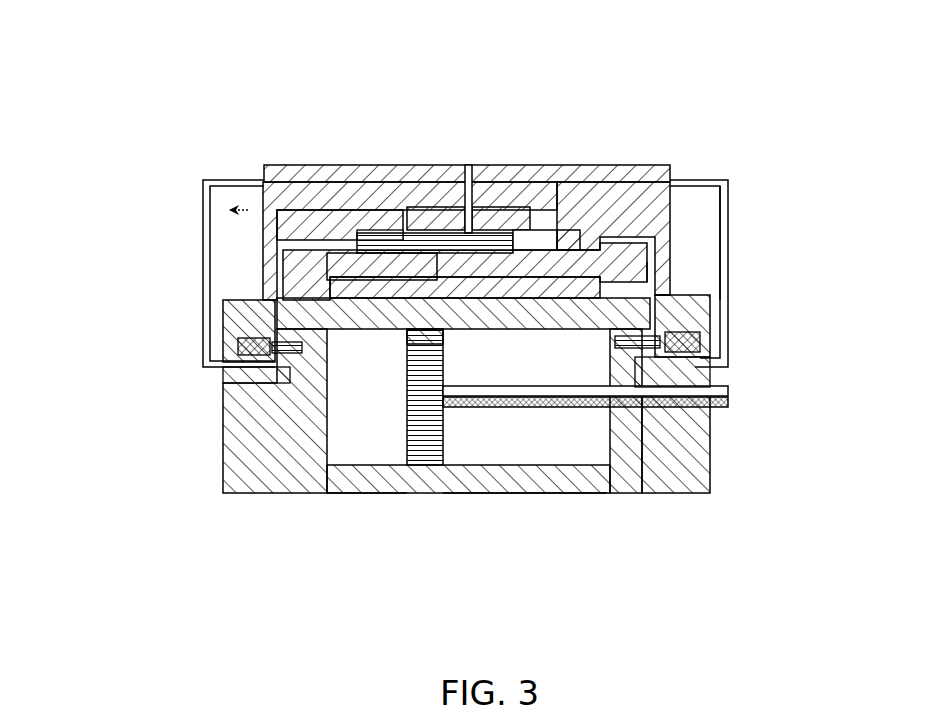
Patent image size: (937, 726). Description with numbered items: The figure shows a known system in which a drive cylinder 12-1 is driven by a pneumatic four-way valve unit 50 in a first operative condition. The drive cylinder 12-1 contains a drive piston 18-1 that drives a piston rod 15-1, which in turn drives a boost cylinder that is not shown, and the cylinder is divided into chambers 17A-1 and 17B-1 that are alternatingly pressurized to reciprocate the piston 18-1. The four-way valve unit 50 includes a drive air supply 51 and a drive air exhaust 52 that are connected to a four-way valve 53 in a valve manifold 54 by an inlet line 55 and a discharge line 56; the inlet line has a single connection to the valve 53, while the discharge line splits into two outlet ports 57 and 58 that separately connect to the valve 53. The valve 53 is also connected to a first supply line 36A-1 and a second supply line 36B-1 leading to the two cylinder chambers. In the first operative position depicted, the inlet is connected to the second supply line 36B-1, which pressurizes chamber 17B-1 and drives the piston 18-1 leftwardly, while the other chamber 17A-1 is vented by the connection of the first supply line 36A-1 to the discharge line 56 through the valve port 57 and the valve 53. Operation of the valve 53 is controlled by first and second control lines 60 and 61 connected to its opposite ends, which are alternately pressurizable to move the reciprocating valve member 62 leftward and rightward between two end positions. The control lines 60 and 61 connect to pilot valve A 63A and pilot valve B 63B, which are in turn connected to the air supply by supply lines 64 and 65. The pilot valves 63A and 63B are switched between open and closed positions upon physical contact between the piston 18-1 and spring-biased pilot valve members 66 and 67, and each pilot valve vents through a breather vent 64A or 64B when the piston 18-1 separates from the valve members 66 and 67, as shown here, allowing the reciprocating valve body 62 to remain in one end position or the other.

The drive cylinder 12-1 is at (395, 541).
The piston rod 15-1 is at (705, 440).
The chamber 17A-1 is at (345, 495).
The chamber 17B-1 is at (585, 495).
The drive piston 18-1 is at (405, 430).
The first supply line 36A-1 is at (300, 281).
The second supply line 36B-1 is at (667, 293).
The four-way valve unit 50 is at (228, 128).
The drive air supply 51 is at (463, 165).
The drive air exhaust 52 is at (262, 186).
The four-way valve 53 is at (549, 215).
The valve manifold 54 is at (675, 247).
The inlet line 55 is at (478, 183).
The discharge line 56 is at (265, 228).
The outlet port 57 is at (468, 178).
The outlet port 58 is at (510, 185).
The first control line 60 is at (267, 253).
The second control line 61 is at (647, 283).
The reciprocating valve member 62 is at (645, 165).
The pilot valve A 63A is at (240, 298).
The pilot valve B 63B is at (678, 315).
The supply line 64 is at (203, 190).
The breather vent 64A is at (220, 381).
The breather vent 64B is at (718, 375).
The supply line 65 is at (722, 180).
The spring-biased pilot valve member 66 is at (300, 362).
The spring-biased pilot valve member 67 is at (700, 335).